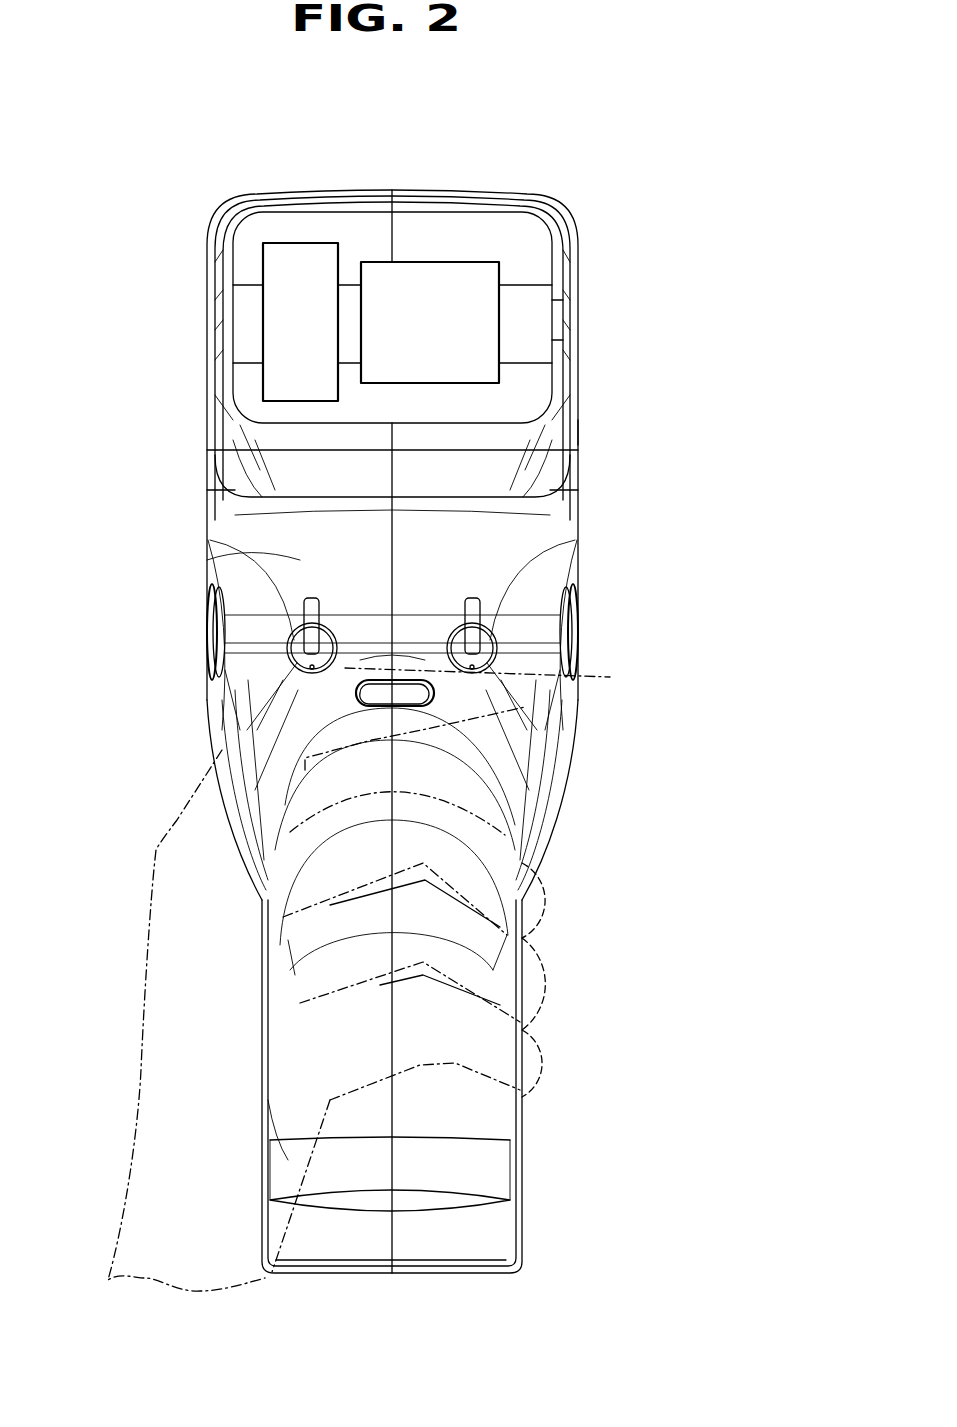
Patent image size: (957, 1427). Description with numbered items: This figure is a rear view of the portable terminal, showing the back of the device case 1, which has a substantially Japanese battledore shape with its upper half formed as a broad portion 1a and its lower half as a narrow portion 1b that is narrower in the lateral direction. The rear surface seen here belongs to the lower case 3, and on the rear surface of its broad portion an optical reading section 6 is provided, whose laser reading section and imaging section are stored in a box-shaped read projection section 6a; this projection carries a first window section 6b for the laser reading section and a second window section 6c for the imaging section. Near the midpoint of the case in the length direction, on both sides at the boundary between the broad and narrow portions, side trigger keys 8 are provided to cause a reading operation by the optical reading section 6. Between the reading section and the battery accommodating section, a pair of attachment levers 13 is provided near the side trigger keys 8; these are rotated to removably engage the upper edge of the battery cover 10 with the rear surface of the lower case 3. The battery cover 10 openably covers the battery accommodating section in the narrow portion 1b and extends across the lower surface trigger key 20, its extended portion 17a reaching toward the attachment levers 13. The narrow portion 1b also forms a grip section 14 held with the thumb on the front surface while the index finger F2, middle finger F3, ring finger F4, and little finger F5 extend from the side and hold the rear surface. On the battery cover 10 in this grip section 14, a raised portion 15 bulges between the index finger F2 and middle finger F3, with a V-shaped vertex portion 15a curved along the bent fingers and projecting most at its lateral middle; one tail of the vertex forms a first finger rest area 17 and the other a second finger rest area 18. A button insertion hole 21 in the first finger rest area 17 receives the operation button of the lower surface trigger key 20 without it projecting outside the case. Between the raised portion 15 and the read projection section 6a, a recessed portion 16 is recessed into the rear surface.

The device case 1 is at (233, 192).
The broad portion 1a is at (582, 432).
The narrow portion 1b is at (262, 996).
The lower case 3 is at (272, 520).
The optical reading section 6 is at (413, 246).
The read projection section 6a is at (538, 323).
The first window section 6b is at (459, 281).
The second window section 6c is at (291, 255).
The side trigger keys 8 is at (207, 632).
The battery cover 10 is at (364, 1163).
The attachment levers 13 is at (298, 642).
The grip section 14 is at (276, 1056).
The raised portion 15 is at (370, 750).
The vertex portion 15a is at (422, 730).
The recessed portion 16 is at (375, 582).
The first finger rest area 17 is at (313, 723).
The extended portion 17a is at (380, 650).
The second finger rest area 18 is at (432, 848).
The lower surface trigger key 20 is at (437, 697).
The button insertion hole 21 is at (378, 682).
The index finger F2 is at (494, 677).
The middle finger F3 is at (545, 905).
The ring finger F4 is at (545, 1000).
The little finger F5 is at (540, 1088).